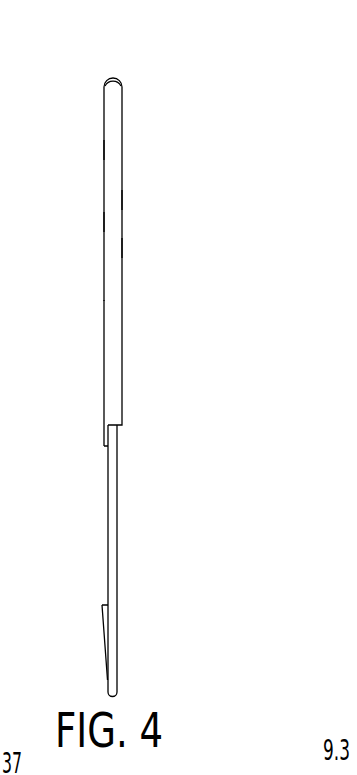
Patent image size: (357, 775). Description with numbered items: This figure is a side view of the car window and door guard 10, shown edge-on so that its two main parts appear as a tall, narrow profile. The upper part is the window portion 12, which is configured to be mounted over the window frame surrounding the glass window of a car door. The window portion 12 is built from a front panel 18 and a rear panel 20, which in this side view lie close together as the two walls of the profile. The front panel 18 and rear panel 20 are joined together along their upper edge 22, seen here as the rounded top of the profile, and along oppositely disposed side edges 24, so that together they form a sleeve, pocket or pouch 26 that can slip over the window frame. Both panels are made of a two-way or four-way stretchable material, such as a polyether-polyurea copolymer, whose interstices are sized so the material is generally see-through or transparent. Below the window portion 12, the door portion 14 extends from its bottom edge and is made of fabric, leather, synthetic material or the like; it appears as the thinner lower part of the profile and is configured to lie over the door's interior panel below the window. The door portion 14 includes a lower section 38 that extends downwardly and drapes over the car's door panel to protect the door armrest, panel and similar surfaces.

The car window and door guard 10 is at (162, 94).
The window portion 12 is at (122, 150).
The door portion 14 is at (117, 522).
The front panel 18 is at (104, 222).
The rear panel 20 is at (122, 200).
The upper edge 22 is at (113, 78).
The side edges 24 is at (104, 150).
The pouch 26 is at (122, 248).
The lower section 38 is at (108, 532).